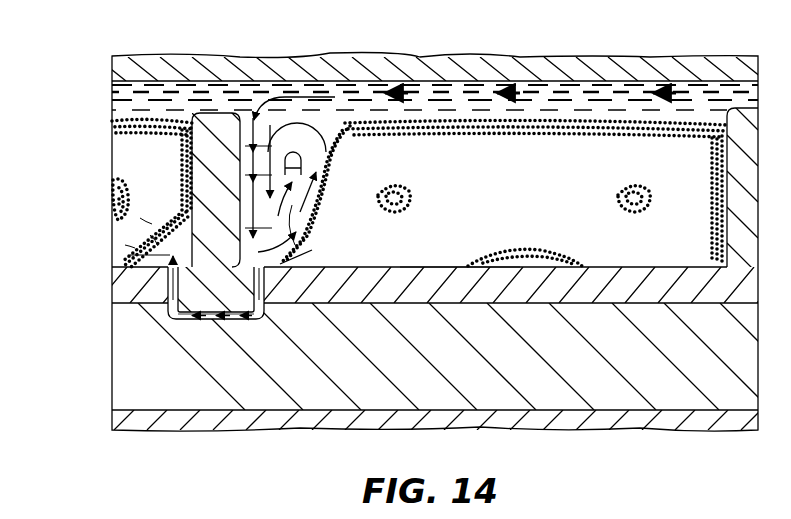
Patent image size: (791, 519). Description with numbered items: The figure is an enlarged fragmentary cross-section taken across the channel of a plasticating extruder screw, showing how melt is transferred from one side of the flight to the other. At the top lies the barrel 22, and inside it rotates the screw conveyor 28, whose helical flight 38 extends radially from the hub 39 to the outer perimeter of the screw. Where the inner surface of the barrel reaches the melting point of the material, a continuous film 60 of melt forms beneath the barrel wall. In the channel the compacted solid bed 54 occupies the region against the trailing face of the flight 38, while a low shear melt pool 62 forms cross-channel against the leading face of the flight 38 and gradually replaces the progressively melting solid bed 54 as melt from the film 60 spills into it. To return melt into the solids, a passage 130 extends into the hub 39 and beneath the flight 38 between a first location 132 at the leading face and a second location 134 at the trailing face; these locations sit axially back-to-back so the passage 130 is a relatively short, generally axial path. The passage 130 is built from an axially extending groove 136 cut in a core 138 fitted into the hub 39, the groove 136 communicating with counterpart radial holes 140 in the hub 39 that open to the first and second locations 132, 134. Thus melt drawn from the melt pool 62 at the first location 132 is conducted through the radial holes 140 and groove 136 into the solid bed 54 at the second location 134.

The barrel 22 is at (385, 30).
The screw conveyor 28 is at (644, 420).
The helical flight 38 is at (217, 124).
The hub 39 is at (585, 290).
The solid bed 54 is at (567, 162).
The continuous film 60 is at (483, 103).
The melt pool 62 is at (342, 164).
The passage 130 is at (169, 322).
The first location 132 is at (305, 256).
The second location 134 is at (176, 262).
The axially extending groove 136 is at (215, 320).
The core 138 is at (417, 317).
The radial hole 140 is at (176, 293).